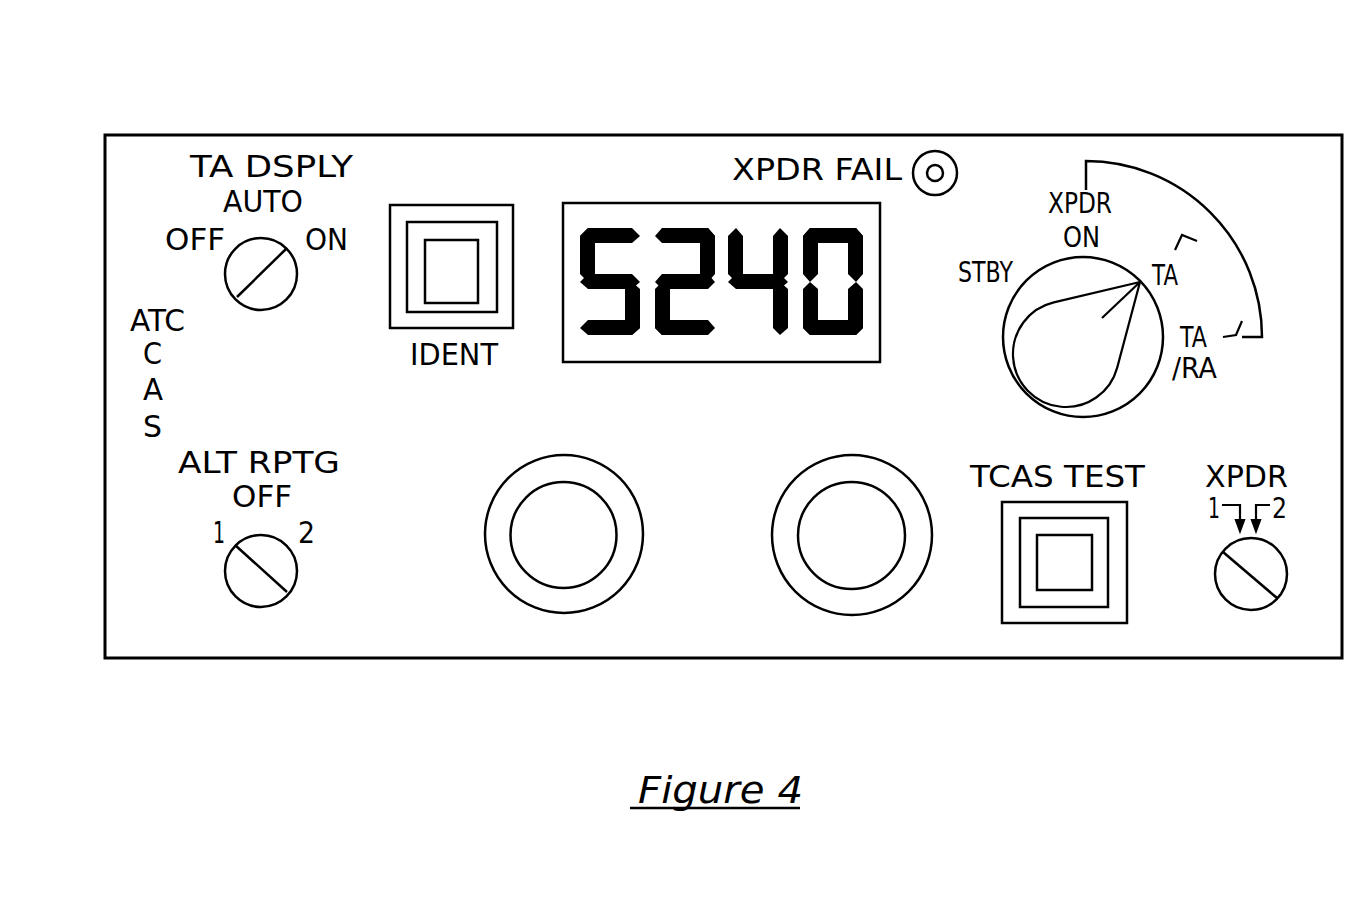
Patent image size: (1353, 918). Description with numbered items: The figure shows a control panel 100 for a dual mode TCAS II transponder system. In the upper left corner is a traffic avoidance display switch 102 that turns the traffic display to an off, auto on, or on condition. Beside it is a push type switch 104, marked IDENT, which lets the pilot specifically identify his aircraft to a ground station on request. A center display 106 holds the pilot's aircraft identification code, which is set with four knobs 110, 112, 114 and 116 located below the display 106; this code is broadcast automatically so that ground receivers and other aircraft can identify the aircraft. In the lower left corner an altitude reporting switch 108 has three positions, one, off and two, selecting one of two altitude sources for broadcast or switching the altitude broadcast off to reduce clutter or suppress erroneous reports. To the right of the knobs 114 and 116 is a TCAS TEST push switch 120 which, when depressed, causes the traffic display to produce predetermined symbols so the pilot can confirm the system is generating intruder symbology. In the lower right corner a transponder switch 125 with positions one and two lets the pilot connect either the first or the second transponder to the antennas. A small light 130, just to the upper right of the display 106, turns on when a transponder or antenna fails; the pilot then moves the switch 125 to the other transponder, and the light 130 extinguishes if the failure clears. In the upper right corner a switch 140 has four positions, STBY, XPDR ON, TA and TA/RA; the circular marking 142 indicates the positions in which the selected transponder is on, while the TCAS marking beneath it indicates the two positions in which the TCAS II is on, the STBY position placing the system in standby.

The control panel 100 is at (723, 339).
The traffic avoidance display switch 102 is at (298, 272).
The push type switch 104 is at (452, 205).
The center display 106 is at (680, 203).
The altitude reporting switch 108 is at (298, 570).
The knob 110 is at (493, 495).
The knob 112 is at (590, 580).
The knob 114 is at (782, 495).
The knob 116 is at (878, 578).
The TCAS TEST push switch 120 is at (1130, 593).
The transponder switch 125 is at (1282, 597).
The light 130 is at (958, 167).
The switch 140 is at (1000, 350).
The circular marking 142 is at (1232, 228).